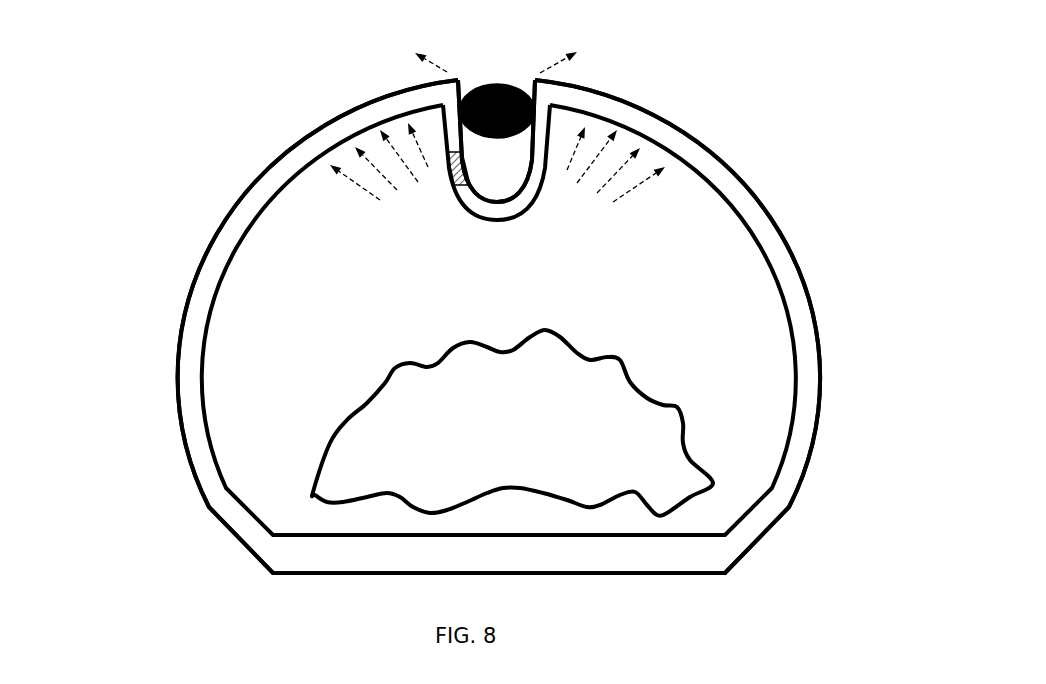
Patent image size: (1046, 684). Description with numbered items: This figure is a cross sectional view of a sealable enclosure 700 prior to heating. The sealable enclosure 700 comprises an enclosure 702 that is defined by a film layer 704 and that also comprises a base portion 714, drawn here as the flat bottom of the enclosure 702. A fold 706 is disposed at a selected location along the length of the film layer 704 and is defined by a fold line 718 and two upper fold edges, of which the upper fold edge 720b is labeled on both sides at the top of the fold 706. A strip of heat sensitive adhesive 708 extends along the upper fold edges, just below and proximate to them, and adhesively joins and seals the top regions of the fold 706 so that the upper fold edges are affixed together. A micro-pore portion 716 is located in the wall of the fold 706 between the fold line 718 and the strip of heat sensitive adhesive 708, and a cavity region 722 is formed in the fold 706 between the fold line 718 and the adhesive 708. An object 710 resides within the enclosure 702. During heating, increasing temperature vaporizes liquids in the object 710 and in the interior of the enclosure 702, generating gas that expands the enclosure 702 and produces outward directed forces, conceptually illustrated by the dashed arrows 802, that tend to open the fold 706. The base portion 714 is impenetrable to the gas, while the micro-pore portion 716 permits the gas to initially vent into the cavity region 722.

The sealable enclosure 700 is at (131, 567).
The enclosure 702 is at (872, 170).
The film layer 704 is at (232, 212).
The fold 706 is at (571, 264).
The strip of heat sensitive adhesive 708 is at (497, 85).
The object 710 is at (527, 428).
The base portion 714 is at (295, 574).
The micro-pore portion 716 is at (449, 176).
The fold line 718 is at (497, 222).
The upper fold edge 720b is at (440, 91).
The cavity region 722 is at (503, 165).
The dashed arrows 802 is at (325, 198).